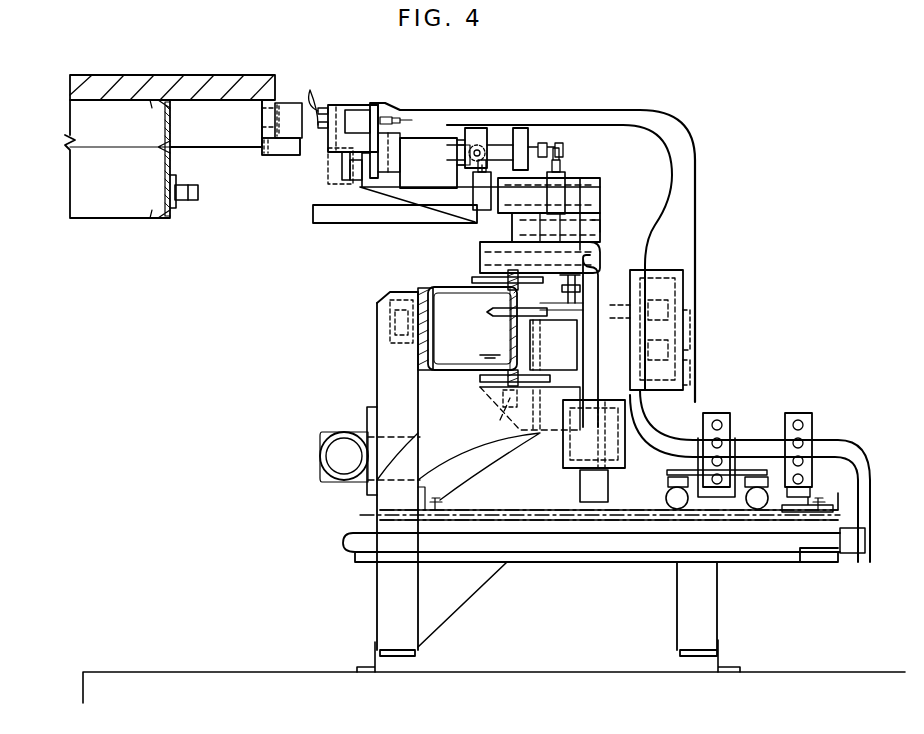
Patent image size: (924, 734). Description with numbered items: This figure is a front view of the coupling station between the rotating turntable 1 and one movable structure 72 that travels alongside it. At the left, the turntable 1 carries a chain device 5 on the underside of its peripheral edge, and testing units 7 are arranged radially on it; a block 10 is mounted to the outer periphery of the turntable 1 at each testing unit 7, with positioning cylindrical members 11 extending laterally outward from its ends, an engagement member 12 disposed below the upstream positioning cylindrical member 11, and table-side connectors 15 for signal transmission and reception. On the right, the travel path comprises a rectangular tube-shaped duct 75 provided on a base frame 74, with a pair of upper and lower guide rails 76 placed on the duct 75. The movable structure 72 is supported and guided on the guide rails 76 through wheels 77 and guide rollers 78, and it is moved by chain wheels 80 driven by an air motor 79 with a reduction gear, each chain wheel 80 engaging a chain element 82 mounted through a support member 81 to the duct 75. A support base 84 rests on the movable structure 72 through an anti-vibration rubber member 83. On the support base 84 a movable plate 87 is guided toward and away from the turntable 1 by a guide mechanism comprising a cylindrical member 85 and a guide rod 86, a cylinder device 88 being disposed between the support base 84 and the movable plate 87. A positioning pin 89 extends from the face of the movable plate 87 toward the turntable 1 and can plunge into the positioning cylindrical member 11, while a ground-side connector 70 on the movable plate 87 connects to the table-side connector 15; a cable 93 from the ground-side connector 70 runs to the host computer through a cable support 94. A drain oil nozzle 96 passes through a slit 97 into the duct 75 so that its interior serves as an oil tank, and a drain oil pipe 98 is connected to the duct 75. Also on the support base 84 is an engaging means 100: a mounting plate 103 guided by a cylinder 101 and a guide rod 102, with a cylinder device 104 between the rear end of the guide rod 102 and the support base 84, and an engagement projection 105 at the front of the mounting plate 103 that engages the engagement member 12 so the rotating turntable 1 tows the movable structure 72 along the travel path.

The turntable 1 is at (150, 222).
The chain device 5 is at (195, 202).
The testing unit 7 is at (150, 75).
The block 10 is at (190, 96).
The positioning cylindrical member 11 is at (294, 102).
The engagement member 12 is at (262, 153).
The table-side connector 15 is at (268, 127).
The ground-side connector 70 is at (322, 112).
The movable structure 72 is at (522, 432).
The base frame 74 is at (383, 587).
The duct 75 is at (430, 338).
The guide rail 76 is at (500, 289).
The wheel 77 is at (595, 232).
The guide roller 78 is at (474, 280).
The air motor 79 is at (570, 503).
The chain wheel 80 is at (625, 291).
The support member 81 is at (548, 322).
The chain element 82 is at (578, 284).
The anti-vibration rubber member 83 is at (572, 222).
The support base 84 is at (572, 195).
The cylindrical member 85 is at (410, 140).
The guide rod 86 is at (492, 128).
The movable plate 87 is at (373, 108).
The cylinder device 88 is at (493, 132).
The positioning pin 89 is at (340, 108).
The cable 93 is at (676, 168).
The cable support 94 is at (738, 458).
The drain oil nozzle 96 is at (490, 313).
The slit 97 is at (490, 354).
The drain oil pipe 98 is at (322, 457).
The engaging means 100 is at (339, 180).
The cylinder 101 is at (366, 185).
The guide rod 102 is at (360, 207).
The mounting plate 103 is at (340, 154).
The cylinder device 104 is at (532, 158).
The engagement projection 105 is at (327, 145).